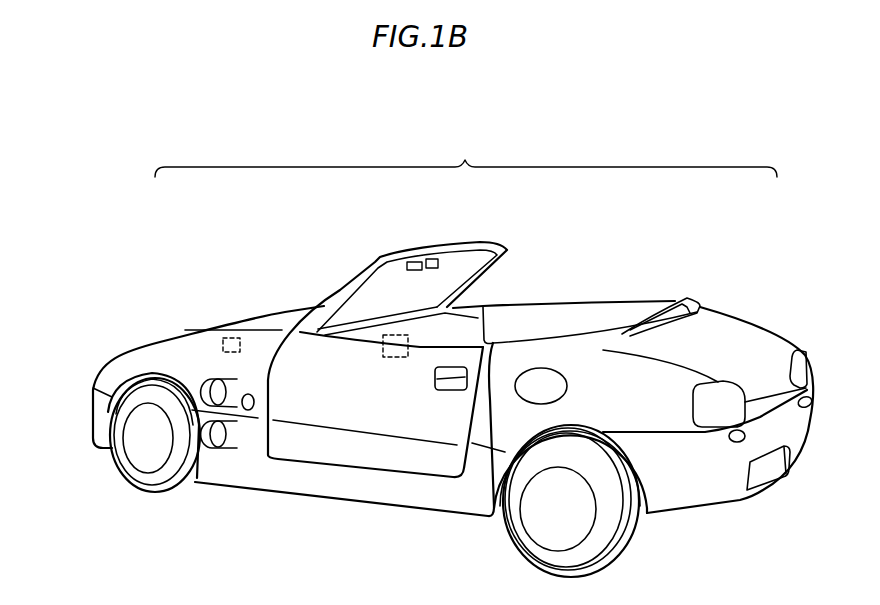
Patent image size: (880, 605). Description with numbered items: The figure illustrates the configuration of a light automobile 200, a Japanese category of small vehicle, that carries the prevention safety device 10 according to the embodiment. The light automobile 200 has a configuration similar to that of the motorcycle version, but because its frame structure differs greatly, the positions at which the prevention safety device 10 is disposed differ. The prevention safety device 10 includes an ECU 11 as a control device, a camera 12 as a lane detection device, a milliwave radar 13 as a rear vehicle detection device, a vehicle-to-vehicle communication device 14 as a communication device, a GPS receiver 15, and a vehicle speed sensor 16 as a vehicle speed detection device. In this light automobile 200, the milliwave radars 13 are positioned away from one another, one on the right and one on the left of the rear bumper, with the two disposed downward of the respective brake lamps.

The light automobile 200 is at (717, 153).
The prevention safety device 10 is at (466, 155).
The ECU 11 is at (410, 336).
The camera 12 is at (248, 394).
The milliwave radar 13 is at (735, 430).
The vehicle-to-vehicle communication device 14 is at (414, 262).
The GPS receiver 15 is at (430, 259).
The vehicle speed sensor 16 is at (232, 338).